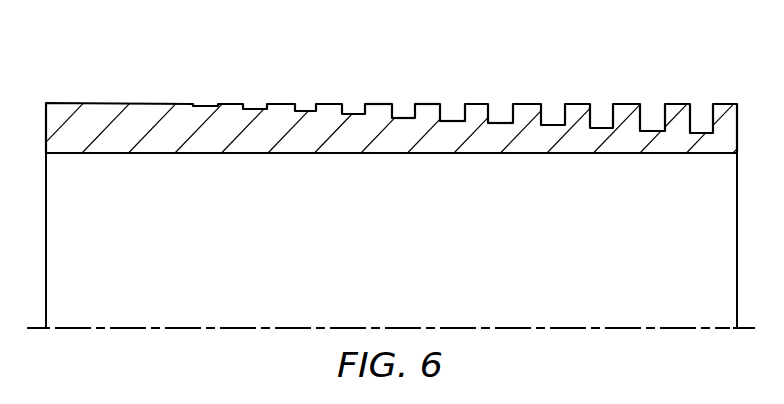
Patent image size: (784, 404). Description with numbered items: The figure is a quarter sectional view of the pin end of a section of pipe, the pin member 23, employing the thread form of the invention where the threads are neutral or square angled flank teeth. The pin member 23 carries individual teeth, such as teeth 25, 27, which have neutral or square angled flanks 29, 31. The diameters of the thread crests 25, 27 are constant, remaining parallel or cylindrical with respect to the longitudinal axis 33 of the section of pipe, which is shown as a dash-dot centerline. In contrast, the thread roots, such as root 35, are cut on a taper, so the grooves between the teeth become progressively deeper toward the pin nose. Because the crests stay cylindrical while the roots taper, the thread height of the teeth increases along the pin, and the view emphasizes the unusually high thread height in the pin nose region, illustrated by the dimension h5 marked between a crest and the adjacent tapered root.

The pin member 23 is at (270, 74).
The tooth 25 is at (378, 104).
The tooth 27 is at (428, 103).
The flank 29 is at (458, 116).
The flank 31 is at (493, 118).
The longitudinal axis 33 is at (577, 329).
The thread root 35 is at (402, 117).
The thread height h5 is at (701, 143).